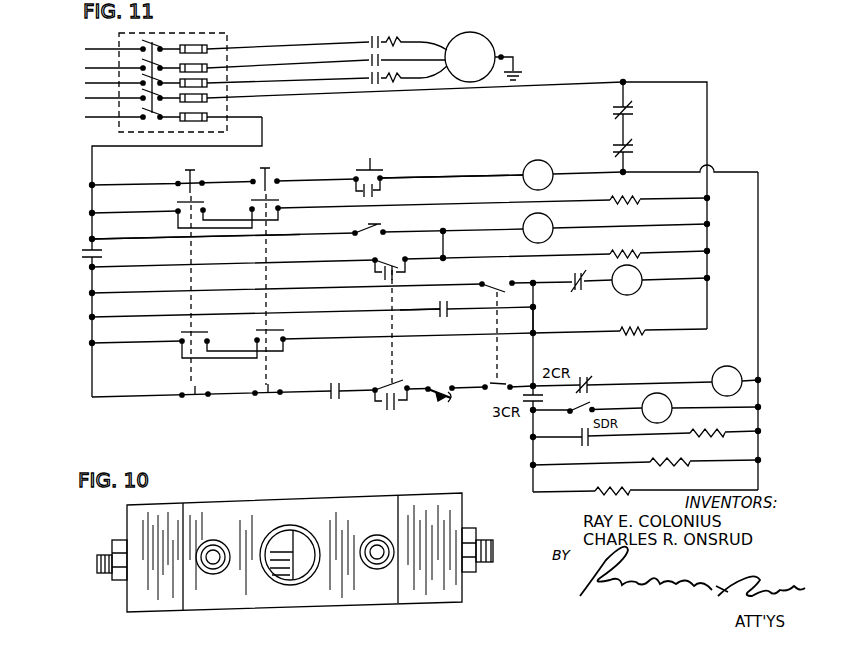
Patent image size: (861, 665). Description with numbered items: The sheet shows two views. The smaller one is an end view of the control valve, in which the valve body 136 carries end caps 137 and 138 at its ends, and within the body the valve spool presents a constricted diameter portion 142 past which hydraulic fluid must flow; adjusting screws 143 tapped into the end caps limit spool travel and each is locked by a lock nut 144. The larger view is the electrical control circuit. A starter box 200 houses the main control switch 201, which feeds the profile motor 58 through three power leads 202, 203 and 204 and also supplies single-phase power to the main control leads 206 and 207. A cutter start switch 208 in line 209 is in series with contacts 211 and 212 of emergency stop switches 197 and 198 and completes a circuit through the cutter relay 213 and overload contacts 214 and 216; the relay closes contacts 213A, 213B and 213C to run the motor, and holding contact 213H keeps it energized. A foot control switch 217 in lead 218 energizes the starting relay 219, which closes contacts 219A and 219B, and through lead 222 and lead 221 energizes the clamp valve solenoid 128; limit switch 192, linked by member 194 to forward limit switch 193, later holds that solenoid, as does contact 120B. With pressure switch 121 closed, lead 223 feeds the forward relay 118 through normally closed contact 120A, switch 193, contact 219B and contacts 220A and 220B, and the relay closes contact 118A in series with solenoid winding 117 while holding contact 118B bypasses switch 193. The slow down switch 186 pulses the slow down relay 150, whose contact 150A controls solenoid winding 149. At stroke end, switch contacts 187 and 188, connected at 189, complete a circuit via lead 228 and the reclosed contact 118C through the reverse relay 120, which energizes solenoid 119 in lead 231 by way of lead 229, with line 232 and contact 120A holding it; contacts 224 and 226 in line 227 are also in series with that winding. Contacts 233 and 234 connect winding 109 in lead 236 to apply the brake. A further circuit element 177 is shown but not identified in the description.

In FIG. 11, the main control switch 201 is at (158, 45).
In FIG. 11, the starter box 200 is at (228, 34).
In FIG. 11, the power lead 202 is at (297, 45).
In FIG. 11, the power lead 203 is at (305, 64).
In FIG. 11, the power lead 204 is at (315, 80).
In FIG. 11, the main control lead 206 is at (303, 94).
In FIG. 11, the main control lead 207 is at (227, 147).
In FIG. 11, the contact 213A is at (381, 38).
In FIG. 11, the contact 213B is at (381, 60).
In FIG. 11, the contact 213C is at (382, 84).
In FIG. 11, the profile motor 58 is at (490, 40).
In FIG. 11, the overload contact 216 is at (633, 113).
In FIG. 11, the overload contact 214 is at (633, 151).
In FIG. 11, the emergency stop switch 197 is at (170, 176).
In FIG. 11, the emergency stop switch 198 is at (275, 177).
In FIG. 11, the contact 233 is at (194, 240).
In FIG. 11, the contact 234 is at (268, 244).
In FIG. 11, the lead 236 is at (128, 216).
In FIG. 11, the contact 211 is at (198, 190).
In FIG. 11, the contact 212 is at (272, 188).
In FIG. 11, the winding 109 is at (645, 197).
In FIG. 11, the cutter start switch 208 is at (378, 166).
In FIG. 11, the holding contact 213H is at (375, 192).
In FIG. 11, the line 209 is at (455, 176).
In FIG. 11, the cutter relay 213 is at (541, 160).
In FIG. 11, the lead 223 is at (759, 202).
In FIG. 11, the contact 219A is at (100, 252).
In FIG. 11, the lead 218 is at (310, 236).
In FIG. 11, the foot control switch 217 is at (378, 222).
In FIG. 11, the lead 222 is at (446, 246).
In FIG. 11, the starting relay 219 is at (553, 224).
In FIG. 11, the lead 221 is at (270, 264).
In FIG. 11, the limit switch 192 is at (390, 260).
In FIG. 11, the contact 120B is at (400, 278).
In FIG. 11, the solenoid 128 is at (640, 254).
In FIG. 11, the switch contact 187 is at (497, 284).
In FIG. 11, the contact 118C is at (578, 292).
In FIG. 11, the reverse relay 120 is at (640, 275).
In FIG. 11, the lead 228 is at (303, 313).
In FIG. 11, the line 232 is at (386, 310).
In FIG. 11, the contact 120A is at (450, 314).
In FIG. 11, the line 227 is at (300, 342).
In FIG. 11, the contact 224 is at (197, 332).
In FIG. 11, the contact 226 is at (274, 331).
In FIG. 11, the linking member 194 is at (394, 320).
In FIG. 11, the mechanical connection 189 is at (498, 310).
In FIG. 11, the lead 229 is at (536, 321).
In FIG. 11, the lead 231 is at (582, 333).
In FIG. 11, the solenoid 119 is at (637, 328).
In FIG. 11, the contact 220A is at (185, 398).
In FIG. 11, the contact 220B is at (262, 397).
In FIG. 11, the contact 219B is at (326, 398).
In FIG. 11, the forward limit switch 193 is at (390, 382).
In FIG. 11, the holding contact 118B is at (394, 410).
In FIG. 11, the pressure switch 121 is at (454, 401).
In FIG. 11, the switch contact 188 is at (503, 385).
In FIG. 11, the forward relay 118 is at (715, 370).
In FIG. 11, the contact 118A is at (544, 397).
In FIG. 11, the slow down switch 186 is at (572, 414).
In FIG. 11, the slow down relay 150 is at (672, 404).
In FIG. 11, the contact 150A is at (590, 440).
In FIG. 11, the solenoid winding 149 is at (704, 437).
In FIG. 11, the resistor 177 is at (674, 466).
In FIG. 11, the solenoid winding 117 is at (612, 488).
In FIG. 10, the end cap 137 is at (172, 513).
In FIG. 10, the valve body 136 is at (353, 506).
In FIG. 10, the constricted diameter portion 142 is at (300, 538).
In FIG. 10, the end cap 138 is at (430, 506).
In FIG. 10, the adjusting screw 143 is at (104, 575).
In FIG. 10, the lock nut 144 is at (120, 582).